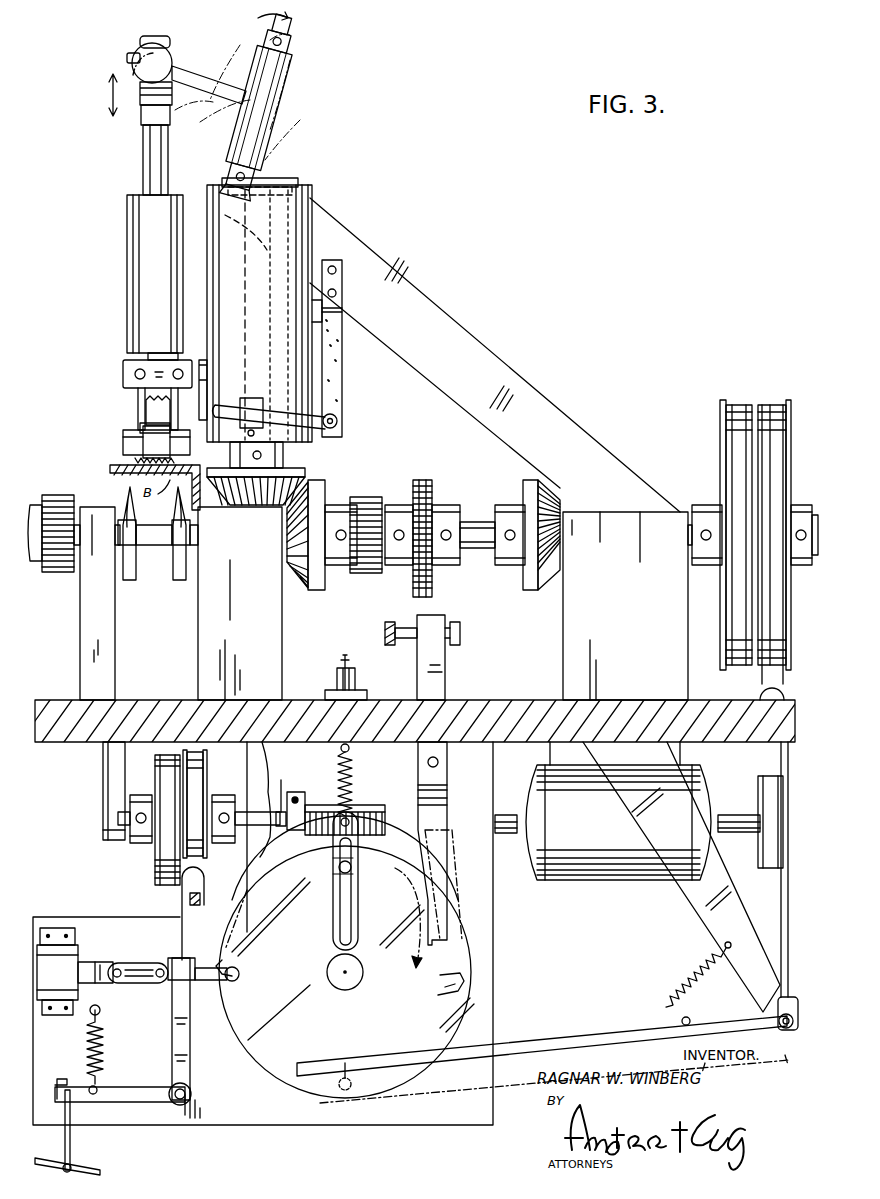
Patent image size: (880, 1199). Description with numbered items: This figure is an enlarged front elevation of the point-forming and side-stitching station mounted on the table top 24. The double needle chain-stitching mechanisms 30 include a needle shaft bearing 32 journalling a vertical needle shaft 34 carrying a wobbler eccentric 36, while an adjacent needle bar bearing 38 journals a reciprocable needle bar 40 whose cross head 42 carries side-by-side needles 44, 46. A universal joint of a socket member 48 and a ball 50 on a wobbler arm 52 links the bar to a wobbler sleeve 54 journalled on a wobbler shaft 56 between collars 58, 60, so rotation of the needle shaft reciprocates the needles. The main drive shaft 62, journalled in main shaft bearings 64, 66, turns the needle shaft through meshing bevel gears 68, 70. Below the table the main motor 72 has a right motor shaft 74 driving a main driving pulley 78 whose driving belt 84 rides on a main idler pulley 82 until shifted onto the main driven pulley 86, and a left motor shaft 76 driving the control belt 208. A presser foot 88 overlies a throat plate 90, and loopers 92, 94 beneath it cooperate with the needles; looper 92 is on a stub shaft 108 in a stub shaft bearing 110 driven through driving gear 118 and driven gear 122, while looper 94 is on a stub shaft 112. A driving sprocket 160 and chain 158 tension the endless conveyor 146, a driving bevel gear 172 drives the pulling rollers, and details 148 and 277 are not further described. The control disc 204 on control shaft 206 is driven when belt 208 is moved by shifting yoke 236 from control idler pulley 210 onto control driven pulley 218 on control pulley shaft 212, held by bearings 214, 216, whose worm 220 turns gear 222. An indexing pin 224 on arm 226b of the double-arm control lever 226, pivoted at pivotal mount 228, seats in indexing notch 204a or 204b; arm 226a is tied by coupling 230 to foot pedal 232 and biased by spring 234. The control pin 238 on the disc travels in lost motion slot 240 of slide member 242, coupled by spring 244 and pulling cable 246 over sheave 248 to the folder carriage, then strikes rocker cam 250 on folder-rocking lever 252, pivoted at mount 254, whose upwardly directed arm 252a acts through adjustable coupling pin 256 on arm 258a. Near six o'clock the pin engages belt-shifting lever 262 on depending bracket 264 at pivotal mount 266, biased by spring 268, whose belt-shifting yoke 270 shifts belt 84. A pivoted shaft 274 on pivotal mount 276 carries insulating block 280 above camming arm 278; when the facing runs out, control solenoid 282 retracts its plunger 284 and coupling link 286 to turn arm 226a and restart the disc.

The table top 24 is at (652, 712).
The double needle chain-stitching mechanisms 30 is at (366, 359).
The needle shaft bearing 32 is at (312, 225).
The needle shaft 34 is at (212, 206).
The wobbler eccentric 36 is at (294, 182).
The needle bar bearing 38 is at (140, 256).
The needle bar 40 is at (143, 168).
The cross head 42 is at (123, 364).
The needle 44 is at (137, 394).
The needle 46 is at (179, 400).
The socket member 48 is at (141, 40).
The ball 50 is at (169, 46).
The wobbler arm 52 is at (195, 70).
The wobbler sleeve 54 is at (282, 72).
The wobbler shaft 56 is at (286, 28).
The collar 58 is at (272, 170).
The collar 60 is at (286, 46).
The main drive shaft 62 is at (478, 524).
The main shaft bearing 64 is at (270, 620).
The main shaft bearing 66 is at (646, 532).
The bevel gear 68 is at (322, 488).
The bevel gear 70 is at (298, 476).
The main motor 72 is at (576, 881).
The right motor shaft 74 is at (726, 818).
The left motor shaft 76 is at (504, 815).
The main driving pulley 78 is at (758, 854).
The main idler pulley 82 is at (770, 404).
The driving belt 84 is at (770, 652).
The main driven pulley 86 is at (732, 404).
The presser foot 88 is at (123, 450).
The throat plate 90 is at (113, 478).
The looper 92 is at (131, 582).
The looper 94 is at (178, 582).
The stub shaft 108 is at (104, 557).
The stub shaft bearing 110 is at (104, 664).
The stub shaft 112 is at (194, 608).
The driving gear 118 is at (376, 498).
The driven gear 122 is at (56, 572).
The endless conveyor 146 is at (146, 409).
The jaw plate 148 is at (140, 426).
The chain 158 is at (420, 478).
The driving sprocket 160 is at (430, 478).
The driving bevel gear 172 is at (564, 494).
The control disc 204 is at (270, 1078).
The indexing notch 204a is at (252, 962).
The indexing notch 204b is at (442, 994).
The control shaft 206 is at (340, 990).
The belt 208 is at (192, 752).
The control idler pulley 210 is at (204, 776).
The control pulley shaft 212 is at (281, 780).
The bearing 214 is at (108, 758).
The bearing 216 is at (305, 785).
The control driven pulley 218 is at (164, 756).
The worm 220 is at (368, 794).
The gear 222 is at (239, 890).
The indexing pin 224 is at (238, 980).
The double-arm control lever 226 is at (170, 1030).
The arm 226a is at (157, 1102).
The arm 226b is at (174, 1012).
The pivotal mount 228 is at (184, 1112).
The coupling 230 is at (73, 1150).
The foot pedal 232 is at (62, 1160).
The biasing spring 234 is at (105, 1051).
The shifting yoke 236 is at (181, 902).
The control pin 238 is at (352, 870).
The lost motion slot 240 is at (340, 904).
The folder carriage shift slide member 242 is at (338, 919).
The spring 244 is at (328, 700).
The pulling cable 246 is at (345, 660).
The sheave 248 is at (337, 666).
The rocker cam 250 is at (422, 918).
The folder-rocking lever 252 is at (442, 800).
The upwardly directed arm 252a is at (444, 680).
The pivotal mount 254 is at (448, 706).
The adjustable coupling pin 256 is at (458, 630).
The arm 258a is at (388, 621).
The belt-shifting lever 262 is at (569, 1042).
The depending bracket 264 is at (700, 906).
The pivotal mount 266 is at (786, 1028).
The spring 268 is at (702, 988).
The belt-shifting yoke 270 is at (782, 900).
The pivoted shaft 274 is at (336, 408).
The pivotal mount 276 is at (338, 422).
The band 277 is at (336, 341).
The camming arm 278 is at (240, 406).
The insulating block 280 is at (254, 398).
The control solenoid 282 is at (48, 928).
The plunger 284 is at (91, 962).
The coupling link 286 is at (135, 962).